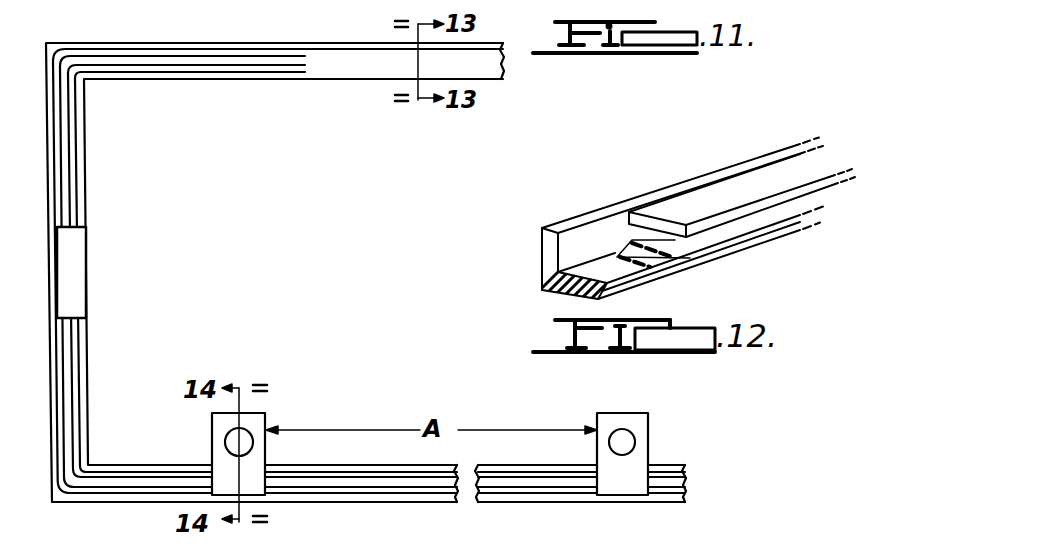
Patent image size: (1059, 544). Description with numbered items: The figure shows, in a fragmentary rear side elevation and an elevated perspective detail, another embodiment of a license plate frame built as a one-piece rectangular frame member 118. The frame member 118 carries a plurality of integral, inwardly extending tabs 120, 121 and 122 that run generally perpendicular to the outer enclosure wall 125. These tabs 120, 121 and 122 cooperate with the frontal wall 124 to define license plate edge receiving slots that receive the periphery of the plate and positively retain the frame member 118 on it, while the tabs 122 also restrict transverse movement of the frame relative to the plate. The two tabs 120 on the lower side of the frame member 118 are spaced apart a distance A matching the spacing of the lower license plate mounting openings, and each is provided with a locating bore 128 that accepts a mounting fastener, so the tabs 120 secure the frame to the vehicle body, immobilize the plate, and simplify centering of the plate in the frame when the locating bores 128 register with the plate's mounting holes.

In FIG. 11, the rectangular frame member 118 is at (210, 84).
In FIG. 11, the tabs 120 is at (264, 422).
In FIG. 11, the tabs 121 is at (359, 68).
In FIG. 12, the tabs 121 is at (680, 205).
In FIG. 11, the tabs 122 is at (75, 268).
In FIG. 12, the frontal wall 124 is at (762, 218).
In FIG. 12, the outer enclosure wall 125 is at (577, 233).
In FIG. 11, the locating bores 128 is at (232, 440).